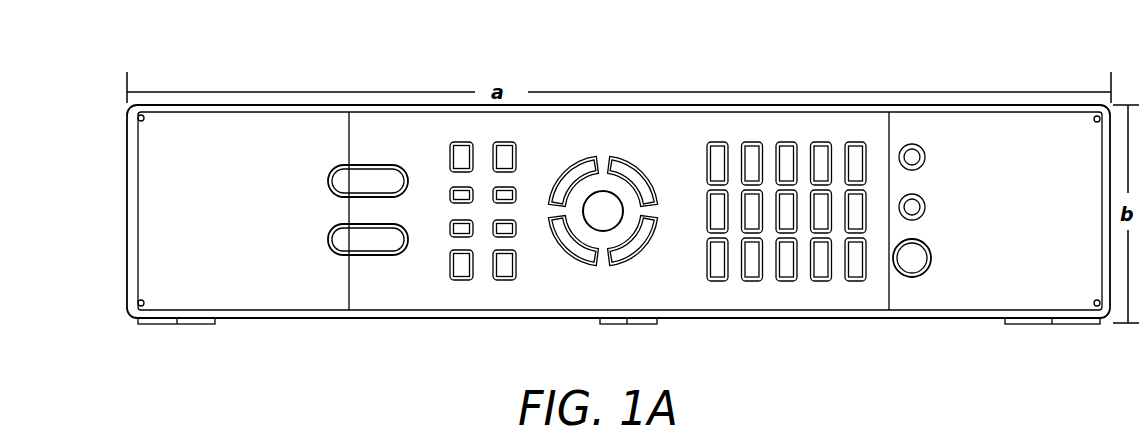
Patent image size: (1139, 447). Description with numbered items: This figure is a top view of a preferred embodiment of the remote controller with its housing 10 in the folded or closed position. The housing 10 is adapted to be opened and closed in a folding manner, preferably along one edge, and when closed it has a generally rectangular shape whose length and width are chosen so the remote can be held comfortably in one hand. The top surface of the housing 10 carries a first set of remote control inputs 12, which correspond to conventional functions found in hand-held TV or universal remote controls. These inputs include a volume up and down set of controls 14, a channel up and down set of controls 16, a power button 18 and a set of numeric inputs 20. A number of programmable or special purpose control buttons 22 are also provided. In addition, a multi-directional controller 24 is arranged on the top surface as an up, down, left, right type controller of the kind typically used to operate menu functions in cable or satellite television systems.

The housing 10 is at (127, 236).
The first set of remote control inputs 12 is at (717, 137).
The volume up and down set of controls 14 is at (370, 165).
The channel up and down set of controls 16 is at (370, 255).
The power button 18 is at (915, 280).
The set of numeric inputs 20 is at (786, 161).
The programmable or special purpose control buttons 22 is at (532, 278).
The multi-directional controller 24 is at (583, 157).